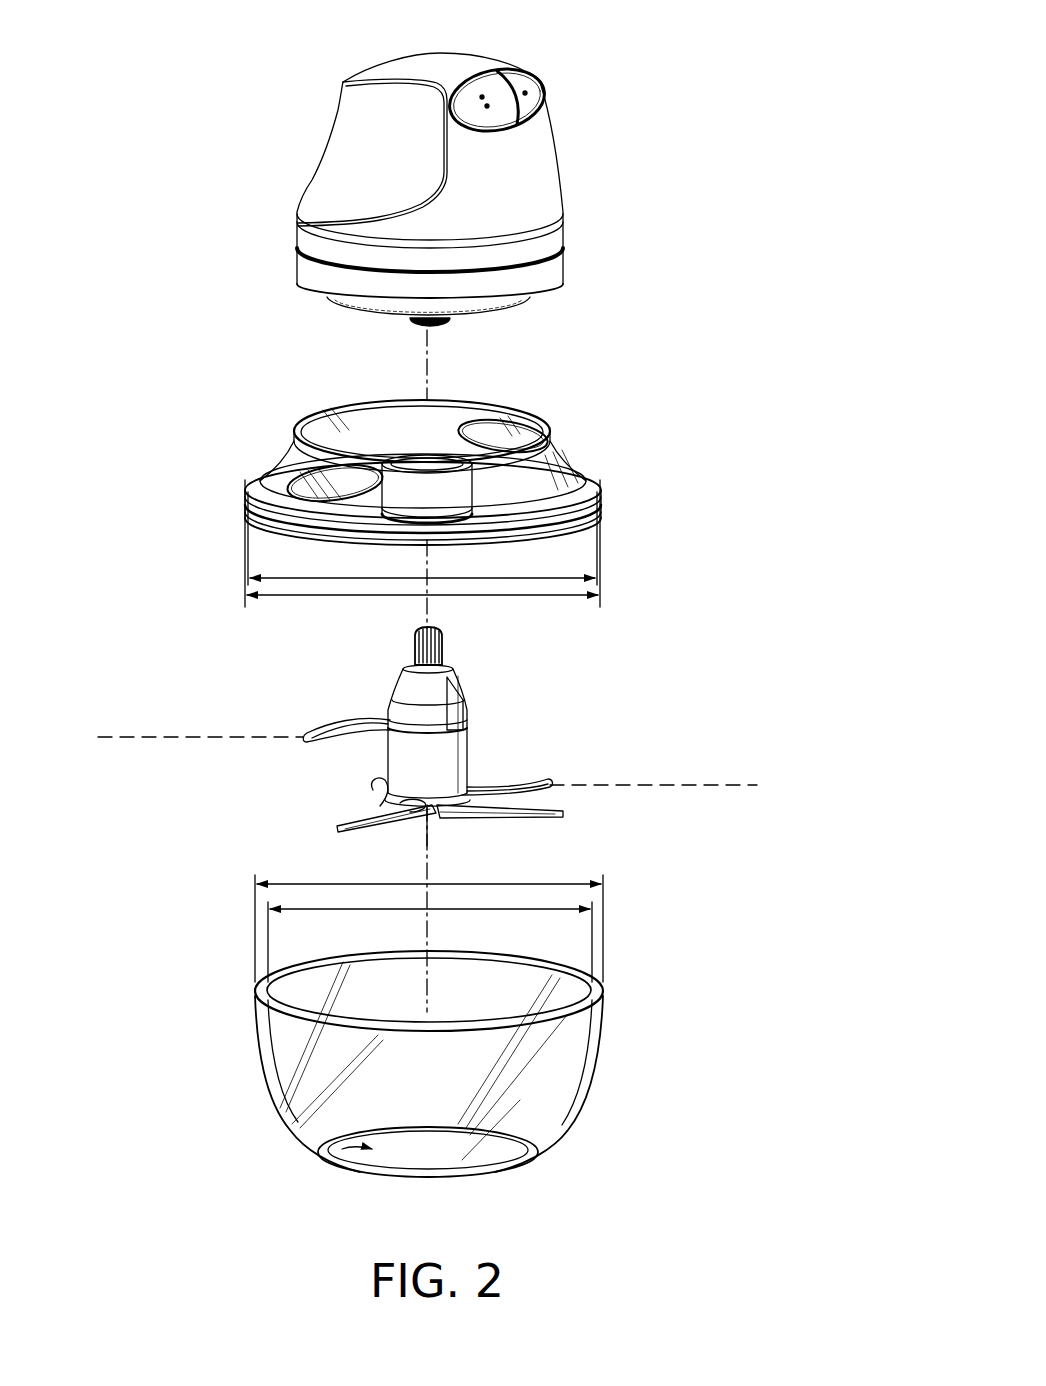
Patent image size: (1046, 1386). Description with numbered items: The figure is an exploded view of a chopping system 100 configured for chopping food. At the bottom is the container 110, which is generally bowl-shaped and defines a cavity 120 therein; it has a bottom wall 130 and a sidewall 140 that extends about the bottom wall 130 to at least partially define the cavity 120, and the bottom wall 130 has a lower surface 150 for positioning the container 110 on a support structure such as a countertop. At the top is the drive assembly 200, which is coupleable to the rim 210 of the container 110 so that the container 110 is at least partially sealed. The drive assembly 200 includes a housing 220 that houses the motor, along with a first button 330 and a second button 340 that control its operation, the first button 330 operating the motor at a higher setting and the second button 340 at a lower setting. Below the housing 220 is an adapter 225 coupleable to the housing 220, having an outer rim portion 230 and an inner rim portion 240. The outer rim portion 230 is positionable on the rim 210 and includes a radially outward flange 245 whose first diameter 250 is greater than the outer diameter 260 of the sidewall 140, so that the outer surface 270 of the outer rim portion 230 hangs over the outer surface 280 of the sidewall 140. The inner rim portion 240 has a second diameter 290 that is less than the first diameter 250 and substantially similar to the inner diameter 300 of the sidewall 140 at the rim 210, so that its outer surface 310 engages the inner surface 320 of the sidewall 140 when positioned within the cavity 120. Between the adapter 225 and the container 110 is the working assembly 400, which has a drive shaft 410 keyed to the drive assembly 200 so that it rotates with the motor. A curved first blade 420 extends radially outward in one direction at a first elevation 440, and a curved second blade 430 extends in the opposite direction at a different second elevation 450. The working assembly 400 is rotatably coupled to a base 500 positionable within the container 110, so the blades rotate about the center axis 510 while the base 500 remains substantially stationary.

The chopping system 100 is at (754, 575).
The container 110 is at (634, 1077).
The cavity 120 is at (405, 1092).
The bottom wall 130 is at (335, 1165).
The sidewall 140 is at (603, 1025).
The lower surface 150 is at (538, 1165).
The drive assembly 200 is at (577, 182).
The rim 210 is at (604, 996).
The housing 220 is at (540, 152).
The adapter 225 is at (267, 450).
The outer rim portion 230 is at (572, 441).
The inner rim portion 240 is at (599, 521).
The flange 245 is at (253, 473).
The first diameter 250 is at (480, 597).
The outer diameter 260 is at (377, 882).
The outer surface 270 is at (594, 477).
The outer surface 280 is at (263, 1040).
The second diameter 290 is at (453, 573).
The inner diameter 300 is at (483, 908).
The outer surface 310 is at (280, 527).
The inner surface 320 is at (297, 993).
The first button 330 is at (481, 74).
The second button 340 is at (533, 80).
The working assembly 400 is at (490, 730).
The drive shaft 410 is at (433, 692).
The first blade 420 is at (337, 720).
The second blade 430 is at (543, 785).
The first elevation 440 is at (175, 738).
The second elevation 450 is at (679, 787).
The base 500 is at (345, 817).
The center axis 510 is at (432, 839).